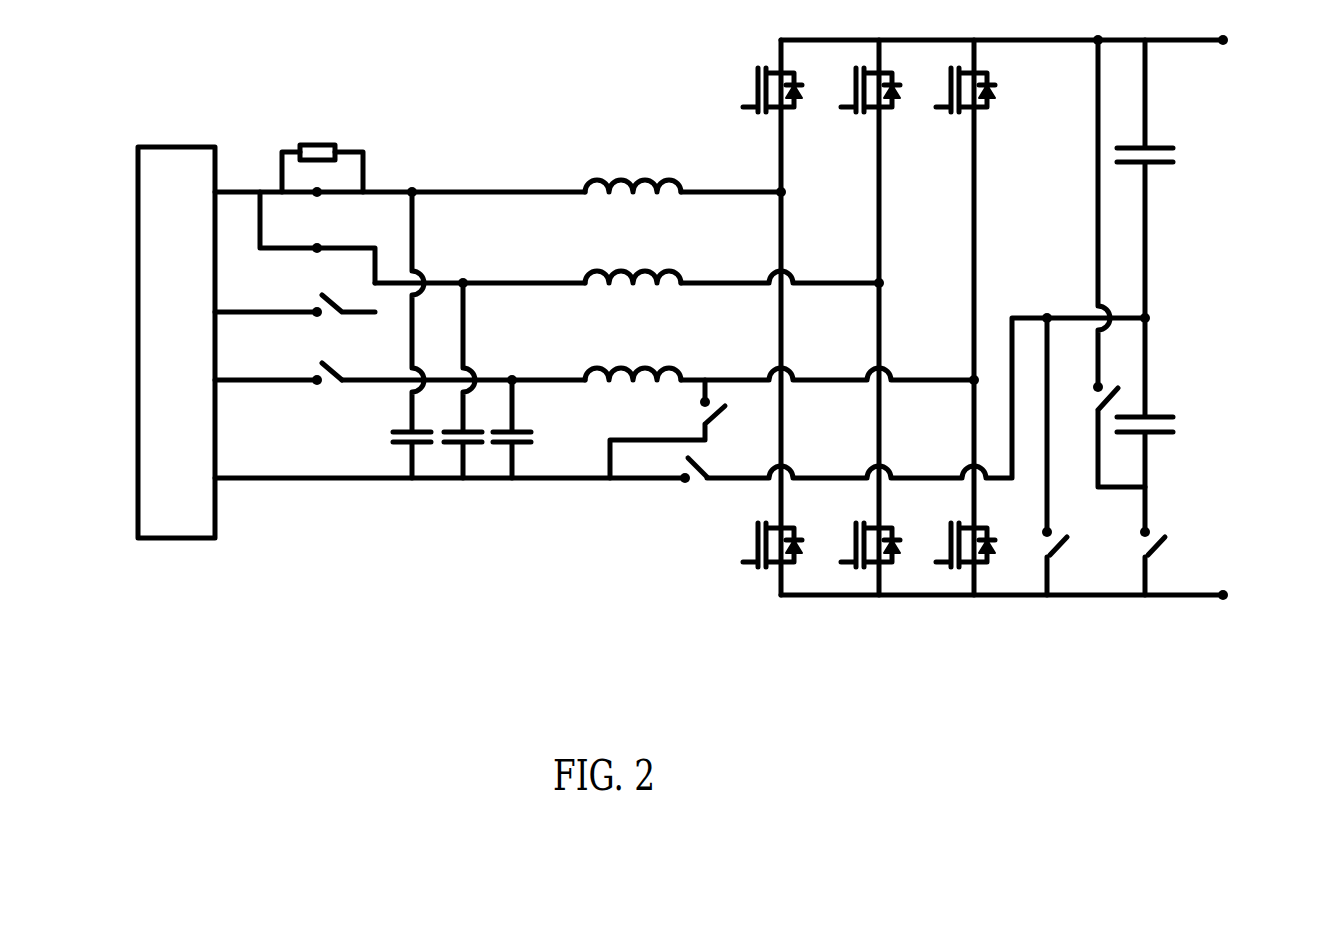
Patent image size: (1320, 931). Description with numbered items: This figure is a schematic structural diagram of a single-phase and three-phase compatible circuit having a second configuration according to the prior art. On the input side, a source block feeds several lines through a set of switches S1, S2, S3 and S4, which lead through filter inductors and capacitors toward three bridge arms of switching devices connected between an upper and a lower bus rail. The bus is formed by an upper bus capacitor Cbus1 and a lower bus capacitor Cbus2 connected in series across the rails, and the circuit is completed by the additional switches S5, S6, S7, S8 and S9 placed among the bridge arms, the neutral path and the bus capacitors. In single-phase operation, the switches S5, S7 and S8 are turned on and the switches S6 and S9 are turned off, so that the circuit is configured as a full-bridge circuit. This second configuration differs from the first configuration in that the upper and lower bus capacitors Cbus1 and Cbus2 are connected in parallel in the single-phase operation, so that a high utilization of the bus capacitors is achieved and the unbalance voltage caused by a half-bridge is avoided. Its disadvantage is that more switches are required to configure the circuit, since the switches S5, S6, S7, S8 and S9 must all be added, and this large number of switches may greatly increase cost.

The first switch (precharge switch with resistor) S1 is at (322, 194).
The second switch S2 is at (317, 247).
The third switch S3 is at (295, 328).
The fourth switch S4 is at (278, 401).
The switch S5 is at (667, 429).
The switch S6 is at (681, 498).
The switch S7 is at (1077, 454).
The switch S8 is at (1097, 263).
The switch S9 is at (1185, 556).
The first bus capacitor Cbus1 is at (1207, 181).
The second bus capacitor Cbus2 is at (1207, 425).